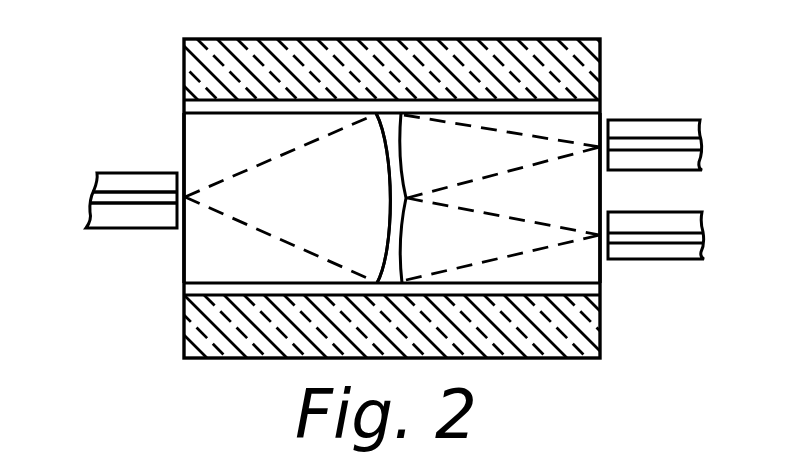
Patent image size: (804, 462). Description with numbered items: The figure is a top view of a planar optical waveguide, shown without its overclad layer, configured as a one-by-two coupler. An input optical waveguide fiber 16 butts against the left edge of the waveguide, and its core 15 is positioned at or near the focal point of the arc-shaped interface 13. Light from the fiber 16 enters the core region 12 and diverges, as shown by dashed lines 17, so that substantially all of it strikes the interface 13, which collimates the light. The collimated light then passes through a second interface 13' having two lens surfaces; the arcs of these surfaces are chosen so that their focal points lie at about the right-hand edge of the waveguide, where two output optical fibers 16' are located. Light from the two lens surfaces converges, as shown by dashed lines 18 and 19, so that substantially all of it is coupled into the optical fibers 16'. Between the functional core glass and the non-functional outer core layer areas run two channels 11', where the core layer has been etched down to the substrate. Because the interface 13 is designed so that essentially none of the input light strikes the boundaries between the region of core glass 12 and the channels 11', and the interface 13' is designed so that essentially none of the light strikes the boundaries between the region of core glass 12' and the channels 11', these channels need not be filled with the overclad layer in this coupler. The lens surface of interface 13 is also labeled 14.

The channels 11' is at (441, 205).
The core region 12 is at (166, 198).
The region of core glass 12' is at (642, 206).
The interface 13 is at (353, 142).
The interface 13' is at (438, 142).
The lens surface 14 is at (388, 118).
The core 15 is at (100, 196).
The optical waveguide fiber 16 is at (105, 198).
The optical fibers 16' is at (693, 183).
The dashed lines 17 is at (232, 168).
The dashed lines 18 is at (517, 171).
The dashed lines 19 is at (497, 257).